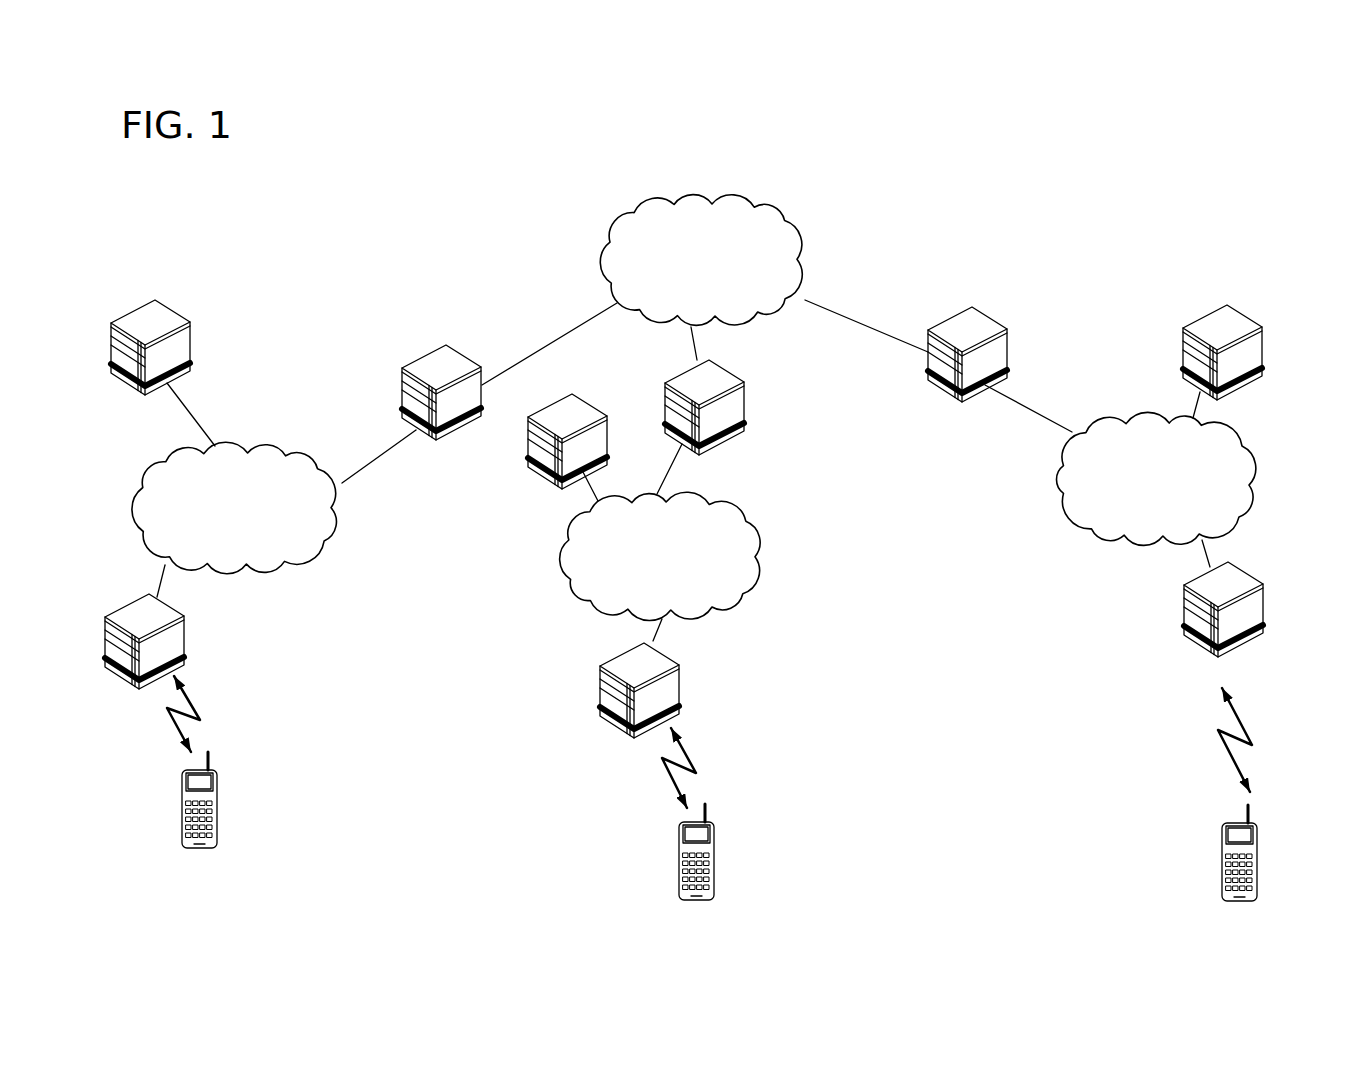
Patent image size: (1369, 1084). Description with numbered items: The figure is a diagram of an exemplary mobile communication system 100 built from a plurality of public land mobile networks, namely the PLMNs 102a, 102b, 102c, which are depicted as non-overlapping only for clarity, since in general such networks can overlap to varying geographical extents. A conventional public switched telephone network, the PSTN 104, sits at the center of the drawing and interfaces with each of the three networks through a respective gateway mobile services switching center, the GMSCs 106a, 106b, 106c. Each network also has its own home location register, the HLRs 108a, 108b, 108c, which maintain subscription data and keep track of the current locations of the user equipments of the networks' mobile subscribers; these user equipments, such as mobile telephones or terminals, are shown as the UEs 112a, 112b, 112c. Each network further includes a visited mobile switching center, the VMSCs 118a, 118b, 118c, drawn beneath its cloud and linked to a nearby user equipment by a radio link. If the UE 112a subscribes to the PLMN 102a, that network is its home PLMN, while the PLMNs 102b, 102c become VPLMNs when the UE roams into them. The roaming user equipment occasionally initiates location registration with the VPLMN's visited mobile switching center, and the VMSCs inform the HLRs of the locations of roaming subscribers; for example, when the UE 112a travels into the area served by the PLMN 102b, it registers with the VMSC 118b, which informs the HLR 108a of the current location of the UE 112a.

The mobile communication system 100 is at (1252, 178).
The PLMN 102a is at (148, 462).
The PLMN 102b is at (735, 497).
The PLMN 102c is at (1238, 422).
The public switched telephone network (PSTN) 104 is at (601, 232).
The gateway mobile services switching center (GMSC) 106a is at (450, 352).
The gateway mobile services switching center (GMSC) 106b is at (724, 382).
The gateway mobile services switching center (GMSC) 106c is at (988, 326).
The home location register (HLR) 108a is at (170, 322).
The home location register (HLR) 108b is at (582, 412).
The home location register (HLR) 108c is at (1243, 326).
The user equipment (UE) 112a is at (218, 801).
The user equipment (UE) 112b is at (714, 849).
The user equipment (UE) 112c is at (1258, 853).
The visited mobile switching center (VMSC) 118a is at (163, 614).
The visited mobile switching center (VMSC) 118b is at (660, 664).
The visited mobile switching center (VMSC) 118c is at (1243, 582).